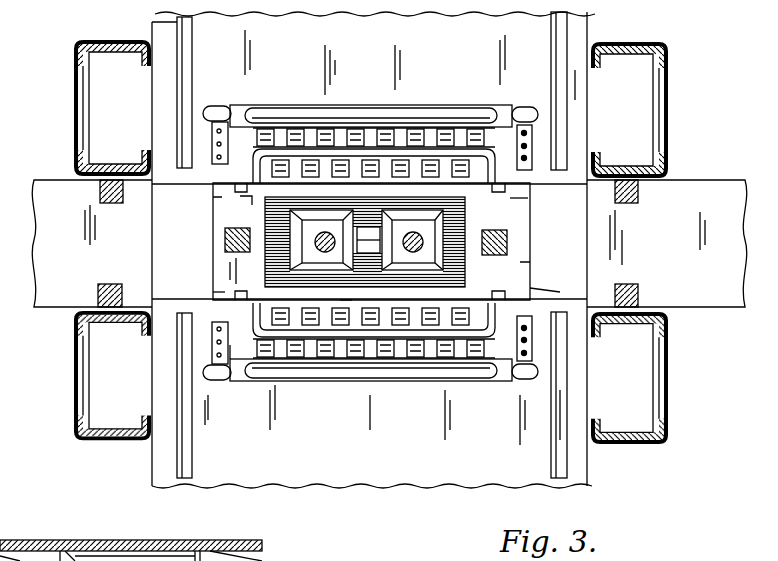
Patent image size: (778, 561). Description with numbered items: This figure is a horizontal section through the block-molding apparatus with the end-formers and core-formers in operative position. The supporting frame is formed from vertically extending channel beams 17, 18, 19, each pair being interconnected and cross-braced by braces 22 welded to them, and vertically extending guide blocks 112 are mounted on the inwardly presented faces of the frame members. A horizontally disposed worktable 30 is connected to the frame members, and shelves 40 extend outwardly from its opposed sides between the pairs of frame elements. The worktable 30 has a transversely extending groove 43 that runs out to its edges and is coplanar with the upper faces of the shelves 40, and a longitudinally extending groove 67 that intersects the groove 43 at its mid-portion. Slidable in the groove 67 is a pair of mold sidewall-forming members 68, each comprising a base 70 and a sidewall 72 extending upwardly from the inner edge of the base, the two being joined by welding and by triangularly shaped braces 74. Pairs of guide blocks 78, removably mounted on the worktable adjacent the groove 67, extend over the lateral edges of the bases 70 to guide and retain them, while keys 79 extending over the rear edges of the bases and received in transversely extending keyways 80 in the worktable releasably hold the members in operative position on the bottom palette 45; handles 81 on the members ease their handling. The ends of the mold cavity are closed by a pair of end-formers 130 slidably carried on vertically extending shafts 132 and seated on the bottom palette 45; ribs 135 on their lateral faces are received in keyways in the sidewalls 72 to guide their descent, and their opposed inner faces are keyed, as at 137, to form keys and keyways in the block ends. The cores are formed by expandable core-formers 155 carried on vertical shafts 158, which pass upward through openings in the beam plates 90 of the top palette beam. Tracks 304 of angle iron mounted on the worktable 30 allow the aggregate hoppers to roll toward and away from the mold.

The channel beam 17 is at (119, 40).
The channel beam 18 is at (98, 441).
The channel beam 19 is at (660, 47).
The brace 22 is at (372, 246).
The worktable 30 is at (151, 489).
The shelf 40 is at (80, 273).
The transversely extending groove 43 is at (560, 292).
The bottom palette 45 is at (246, 190).
The longitudinally extending groove 67 is at (508, 383).
The mold sidewall-forming member 68 is at (212, 297).
The base 70 is at (248, 344).
The sidewall 72 is at (346, 298).
The triangularly shaped brace 74 is at (343, 140).
The guide block 78 is at (216, 142).
The key 79 is at (253, 112).
The transversely extending keyway 80 is at (224, 108).
The handle 81 is at (420, 150).
The beam plate 90 is at (167, 540).
The guide block 112 is at (98, 190).
The end-former 130 is at (215, 262).
The shaft 132 is at (225, 240).
The rib 135 is at (213, 201).
The keyed inner face 137 is at (520, 202).
The expandable core-former 155 is at (413, 222).
The shaft 158 is at (325, 226).
The track 304 is at (553, 47).